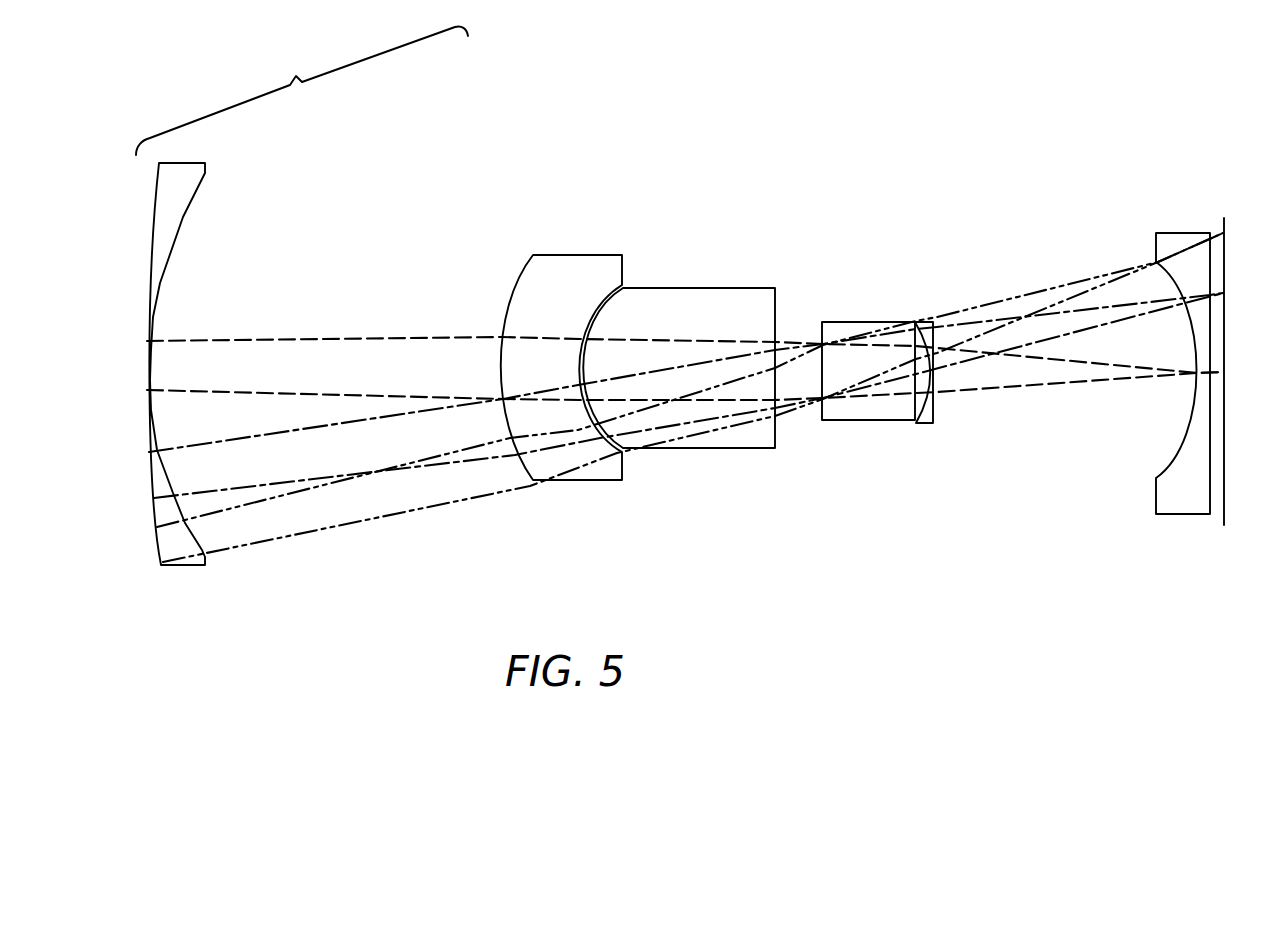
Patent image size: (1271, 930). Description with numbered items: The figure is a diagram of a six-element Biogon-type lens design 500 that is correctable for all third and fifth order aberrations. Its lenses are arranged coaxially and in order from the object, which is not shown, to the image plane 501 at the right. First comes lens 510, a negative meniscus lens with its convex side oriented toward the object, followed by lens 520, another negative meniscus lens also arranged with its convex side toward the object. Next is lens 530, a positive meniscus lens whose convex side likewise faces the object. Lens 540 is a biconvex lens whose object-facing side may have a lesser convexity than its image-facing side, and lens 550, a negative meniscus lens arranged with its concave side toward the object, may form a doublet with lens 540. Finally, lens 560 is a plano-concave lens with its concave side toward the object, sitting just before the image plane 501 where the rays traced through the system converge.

The lens design 500 is at (296, 76).
The image plane 501 is at (1225, 238).
The lens 510 is at (206, 165).
The lens 520 is at (571, 255).
The lens 530 is at (710, 288).
The lens 540 is at (872, 322).
The lens 550 is at (926, 322).
The lens 560 is at (1178, 232).